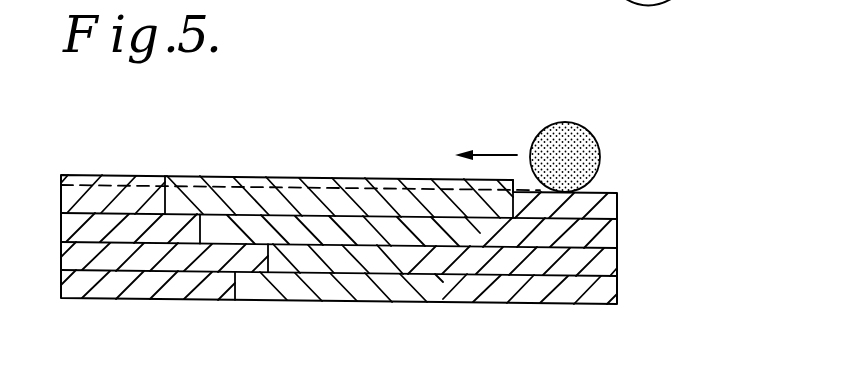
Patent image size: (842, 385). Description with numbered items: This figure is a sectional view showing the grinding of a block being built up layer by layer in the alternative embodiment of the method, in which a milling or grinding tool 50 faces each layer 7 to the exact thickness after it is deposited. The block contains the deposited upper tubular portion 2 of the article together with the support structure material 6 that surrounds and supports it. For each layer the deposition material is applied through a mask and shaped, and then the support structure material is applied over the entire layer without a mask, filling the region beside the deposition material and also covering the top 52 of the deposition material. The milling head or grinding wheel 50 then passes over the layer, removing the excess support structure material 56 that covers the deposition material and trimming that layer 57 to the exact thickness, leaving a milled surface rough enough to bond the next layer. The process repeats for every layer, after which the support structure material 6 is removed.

The upper tubular portion 2 is at (358, 300).
The support structure material 6 is at (181, 312).
The layer 7 is at (592, 207).
The milling or grinding tool 50 is at (578, 142).
The top of deposition material 52 is at (202, 168).
The excess support structure material 56 is at (334, 184).
The layer 57 is at (170, 203).